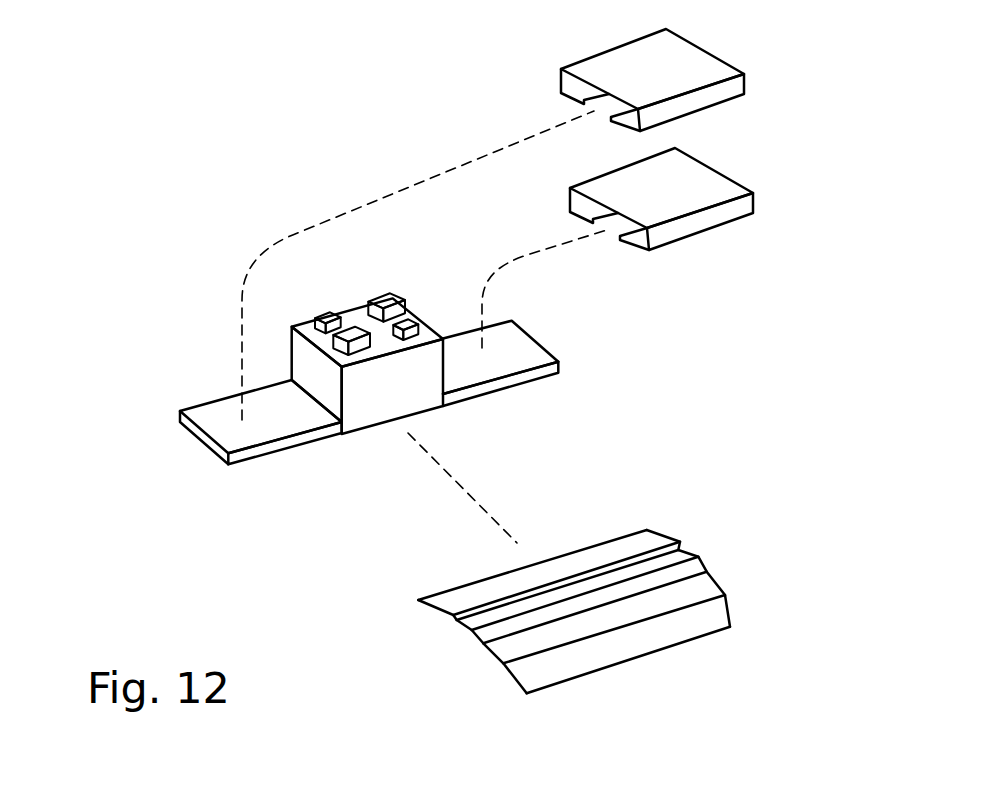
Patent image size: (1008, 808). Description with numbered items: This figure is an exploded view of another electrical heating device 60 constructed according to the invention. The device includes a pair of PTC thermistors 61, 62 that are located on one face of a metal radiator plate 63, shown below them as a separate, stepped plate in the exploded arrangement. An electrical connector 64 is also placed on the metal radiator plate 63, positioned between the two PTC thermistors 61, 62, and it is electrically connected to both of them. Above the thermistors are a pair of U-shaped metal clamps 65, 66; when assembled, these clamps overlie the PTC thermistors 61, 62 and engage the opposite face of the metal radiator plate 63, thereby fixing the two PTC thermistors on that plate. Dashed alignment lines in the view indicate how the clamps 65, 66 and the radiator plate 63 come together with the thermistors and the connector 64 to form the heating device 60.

The electrical heating device 60 is at (202, 282).
The PTC thermistor 61 is at (208, 453).
The PTC thermistor 62 is at (552, 360).
The metal radiator plate 63 is at (490, 662).
The electrical connector 64 is at (354, 306).
The U-shaped metal clamp 65 is at (602, 62).
The U-shaped metal clamp 66 is at (740, 212).